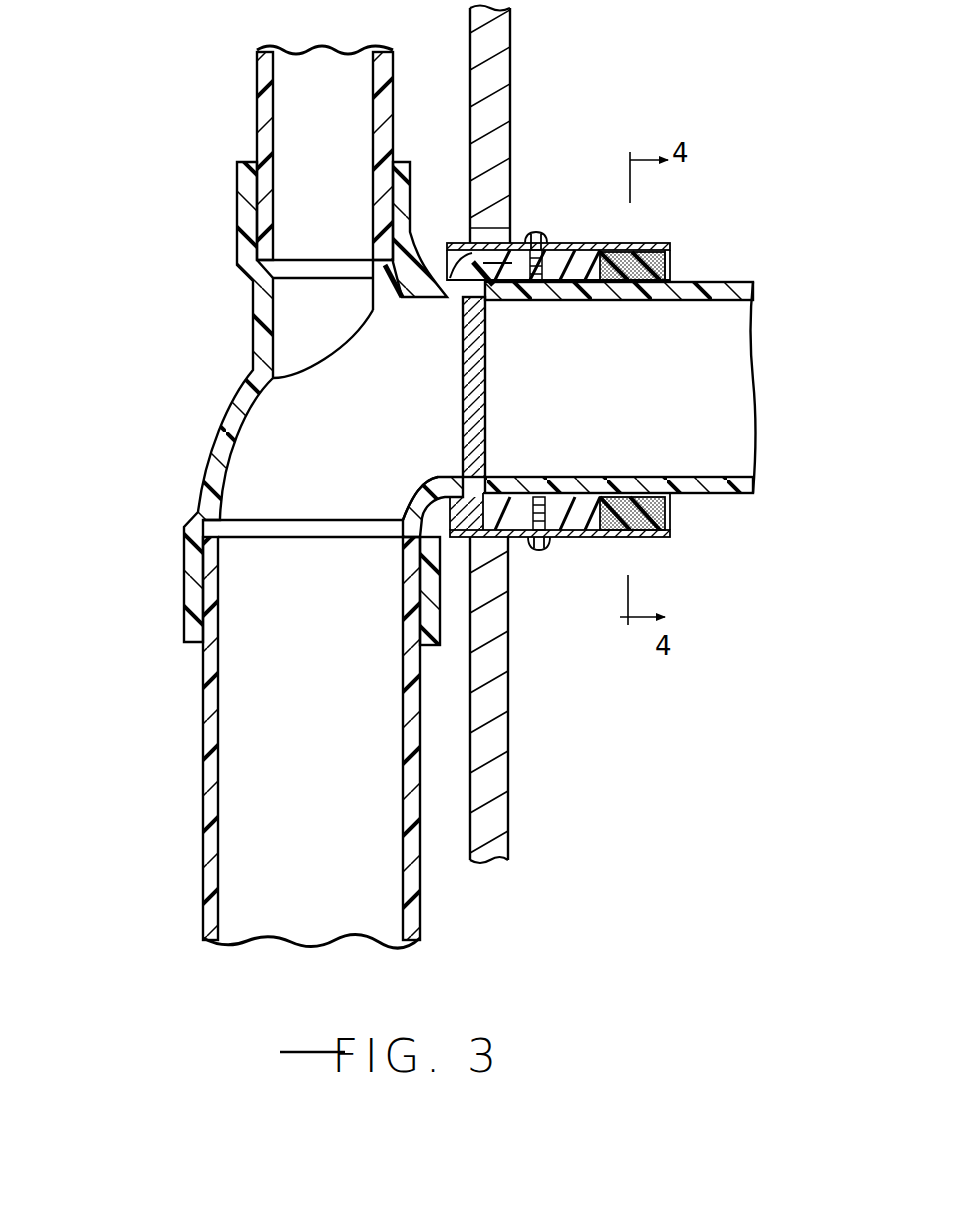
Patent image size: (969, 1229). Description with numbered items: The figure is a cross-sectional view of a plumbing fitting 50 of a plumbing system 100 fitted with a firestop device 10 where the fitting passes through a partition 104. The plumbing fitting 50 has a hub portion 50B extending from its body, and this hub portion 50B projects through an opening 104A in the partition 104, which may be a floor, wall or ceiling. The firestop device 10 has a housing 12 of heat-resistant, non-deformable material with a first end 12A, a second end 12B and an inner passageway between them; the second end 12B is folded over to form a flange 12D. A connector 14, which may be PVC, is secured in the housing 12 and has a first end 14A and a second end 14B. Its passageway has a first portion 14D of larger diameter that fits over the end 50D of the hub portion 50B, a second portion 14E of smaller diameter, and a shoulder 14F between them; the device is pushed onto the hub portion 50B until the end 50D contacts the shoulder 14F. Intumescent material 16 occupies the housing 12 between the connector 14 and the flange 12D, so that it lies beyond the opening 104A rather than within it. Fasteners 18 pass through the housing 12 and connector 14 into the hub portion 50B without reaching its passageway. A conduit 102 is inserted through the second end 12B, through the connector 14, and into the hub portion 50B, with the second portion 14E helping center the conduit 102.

The firestop device 10 is at (645, 238).
The housing 12 is at (590, 540).
The first end 12A is at (440, 548).
The second end 12B is at (670, 538).
The flange 12D is at (670, 522).
The connector 14 is at (567, 245).
The first end 14A is at (452, 290).
The second end 14B is at (668, 262).
The first portion 14D is at (517, 300).
The second portion 14E is at (643, 298).
The shoulder 14F is at (588, 300).
The intumescent material 16 is at (668, 506).
The fasteners 18 is at (548, 540).
The plumbing fitting 50 is at (220, 440).
The hub portion 50B is at (483, 495).
The end of hub portion 50D is at (575, 495).
The plumbing system 100 is at (185, 712).
The conduit 102 is at (758, 470).
The partition 104 is at (497, 690).
The opening 104A is at (490, 235).